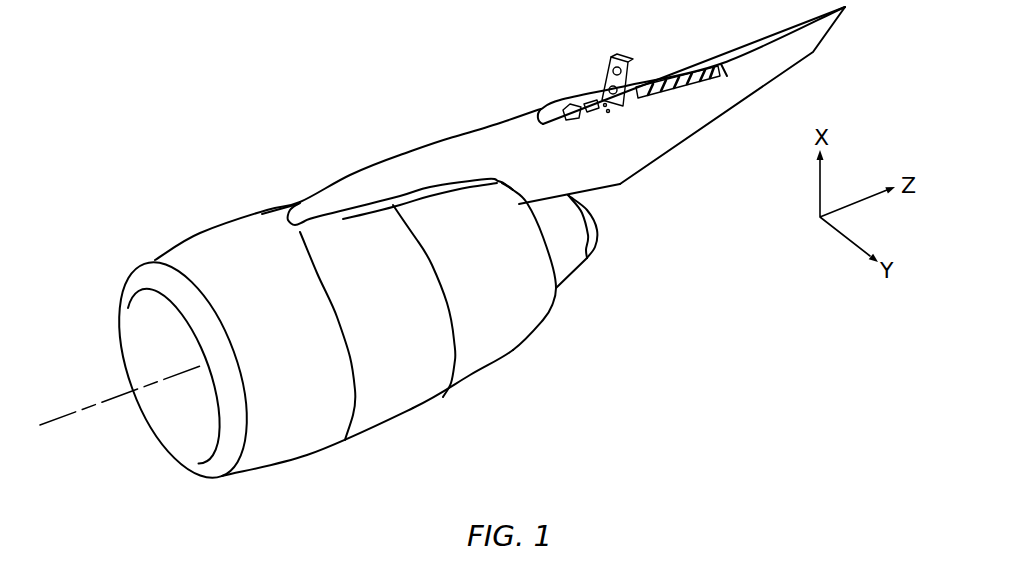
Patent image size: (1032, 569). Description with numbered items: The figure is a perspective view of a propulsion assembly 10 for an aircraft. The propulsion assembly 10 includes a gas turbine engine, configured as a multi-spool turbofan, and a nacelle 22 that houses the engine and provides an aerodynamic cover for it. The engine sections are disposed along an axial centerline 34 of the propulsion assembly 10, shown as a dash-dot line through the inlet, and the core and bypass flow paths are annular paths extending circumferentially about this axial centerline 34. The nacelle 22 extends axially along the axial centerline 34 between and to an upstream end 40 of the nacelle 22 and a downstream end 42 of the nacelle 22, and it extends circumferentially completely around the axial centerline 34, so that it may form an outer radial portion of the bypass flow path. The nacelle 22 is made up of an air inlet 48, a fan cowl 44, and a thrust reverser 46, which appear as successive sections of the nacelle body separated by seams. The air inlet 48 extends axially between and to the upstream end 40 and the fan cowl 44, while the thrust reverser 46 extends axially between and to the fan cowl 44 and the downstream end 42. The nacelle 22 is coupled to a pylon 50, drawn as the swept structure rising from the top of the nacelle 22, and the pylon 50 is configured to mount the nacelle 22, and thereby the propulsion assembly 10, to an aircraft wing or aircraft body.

The propulsion assembly 10 is at (442, 269).
The nacelle 22 is at (585, 318).
The axial centerline 34 is at (52, 424).
The upstream end 40 is at (127, 290).
The downstream end 42 is at (516, 193).
The fan cowl 44 is at (402, 383).
The thrust reverser 46 is at (500, 327).
The air inlet 48 is at (293, 430).
The pylon 50 is at (668, 112).